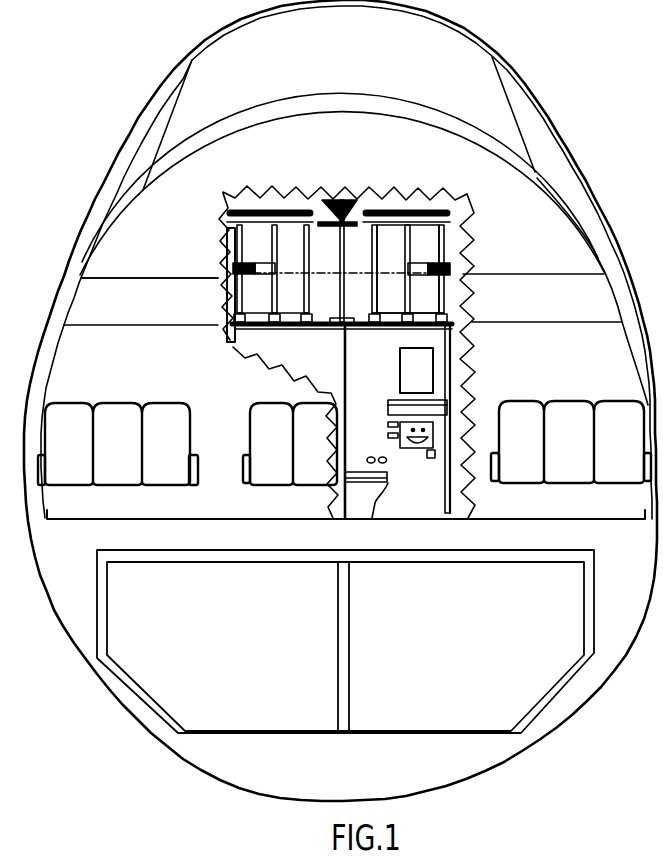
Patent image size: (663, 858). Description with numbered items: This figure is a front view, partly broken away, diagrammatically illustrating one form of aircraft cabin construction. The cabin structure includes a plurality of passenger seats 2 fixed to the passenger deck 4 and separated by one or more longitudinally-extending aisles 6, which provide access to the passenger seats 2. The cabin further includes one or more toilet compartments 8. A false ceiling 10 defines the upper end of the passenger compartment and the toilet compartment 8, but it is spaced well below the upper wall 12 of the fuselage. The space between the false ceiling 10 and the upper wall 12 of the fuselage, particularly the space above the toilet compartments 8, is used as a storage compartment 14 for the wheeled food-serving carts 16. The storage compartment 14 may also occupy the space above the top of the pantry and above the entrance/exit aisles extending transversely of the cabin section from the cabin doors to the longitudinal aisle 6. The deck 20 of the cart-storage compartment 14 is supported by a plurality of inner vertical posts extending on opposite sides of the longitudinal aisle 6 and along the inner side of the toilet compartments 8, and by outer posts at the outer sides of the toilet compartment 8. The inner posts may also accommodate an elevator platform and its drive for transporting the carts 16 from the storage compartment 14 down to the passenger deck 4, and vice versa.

The passenger seats 2 is at (112, 427).
The passenger deck 4 is at (94, 512).
The aisle 6 is at (217, 443).
The toilet compartment 8 is at (432, 339).
The false ceiling 10 is at (155, 332).
The upper wall of the fuselage 12 is at (367, 120).
The storage compartment 14 is at (431, 194).
The wheeled food-serving carts 16 is at (424, 243).
The deck of the cart-storage compartment 20 is at (441, 323).